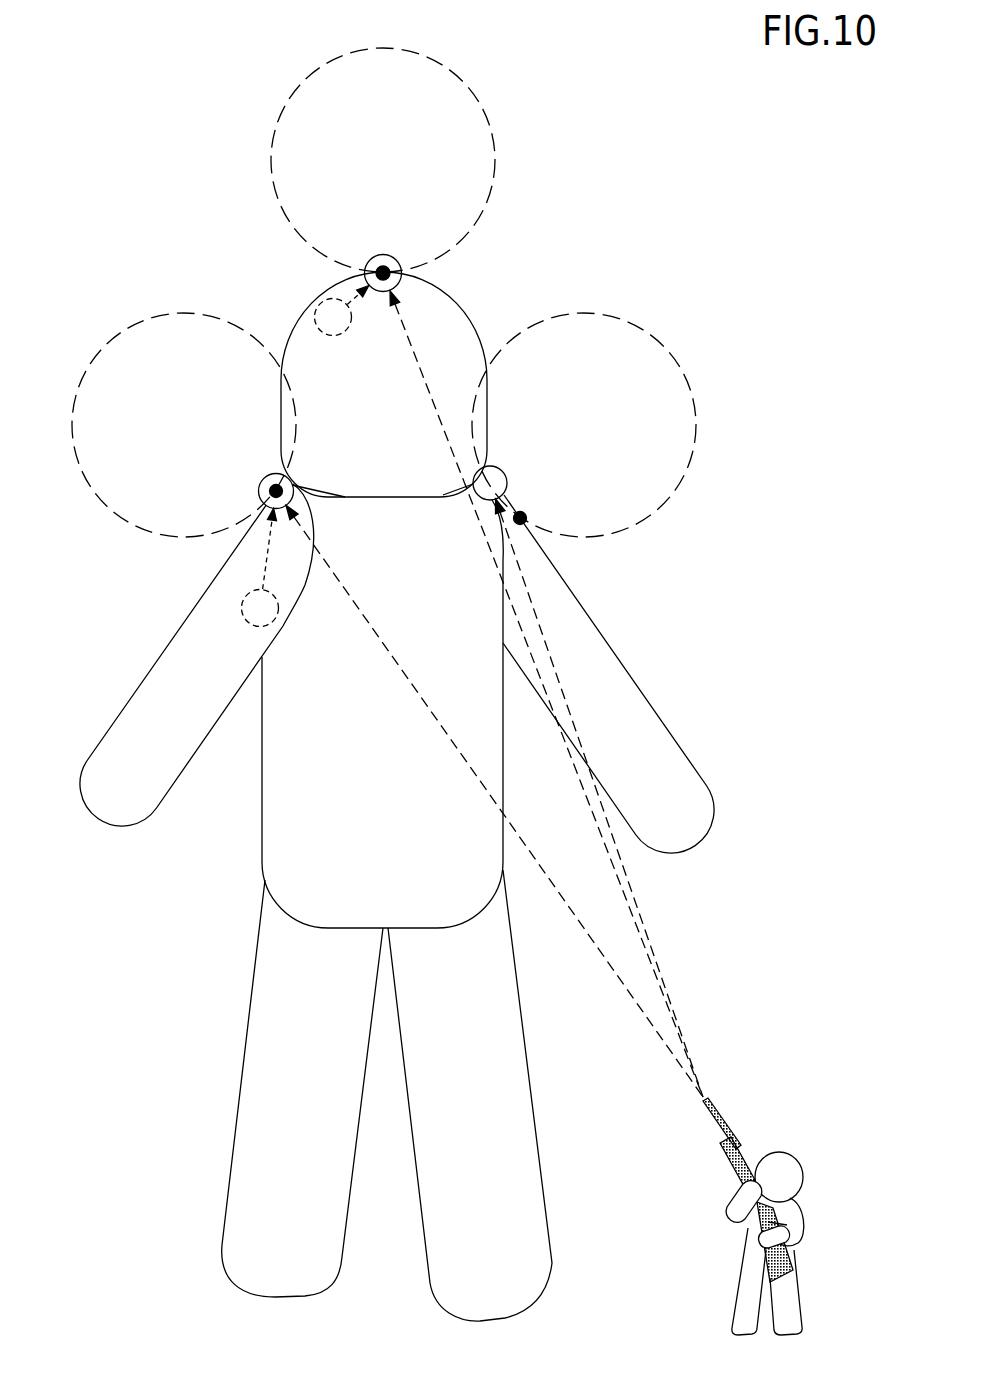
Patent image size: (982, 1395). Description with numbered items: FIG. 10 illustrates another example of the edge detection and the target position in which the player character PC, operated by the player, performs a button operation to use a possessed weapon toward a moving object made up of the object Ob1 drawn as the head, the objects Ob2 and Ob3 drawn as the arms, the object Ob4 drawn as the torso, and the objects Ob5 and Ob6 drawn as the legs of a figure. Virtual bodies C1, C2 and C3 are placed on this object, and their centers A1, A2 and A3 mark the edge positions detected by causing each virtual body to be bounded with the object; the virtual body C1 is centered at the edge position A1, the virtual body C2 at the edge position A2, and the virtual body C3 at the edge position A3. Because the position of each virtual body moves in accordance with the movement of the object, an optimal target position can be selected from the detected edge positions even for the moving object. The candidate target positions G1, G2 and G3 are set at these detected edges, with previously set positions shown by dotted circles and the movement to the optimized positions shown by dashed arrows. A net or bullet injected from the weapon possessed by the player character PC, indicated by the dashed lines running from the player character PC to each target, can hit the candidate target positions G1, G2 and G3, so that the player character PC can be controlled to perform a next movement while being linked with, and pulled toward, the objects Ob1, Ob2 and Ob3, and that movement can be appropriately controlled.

The virtual body C1 is at (403, 50).
The virtual body C2 is at (125, 327).
The virtual body C3 is at (625, 322).
The center of virtual body A1 is at (382, 265).
The center of virtual body A2 is at (272, 484).
The edge position A3 is at (526, 513).
The candidate target position G1 is at (402, 273).
The candidate target position G2 is at (464, 786).
The candidate target position G3 is at (588, 781).
The object Ob1 is at (466, 300).
The object Ob2 is at (153, 667).
The object Ob3 is at (650, 704).
The object Ob4 is at (261, 820).
The object Ob5 is at (236, 1129).
The object Ob6 is at (532, 1096).
The player character PC is at (773, 1140).